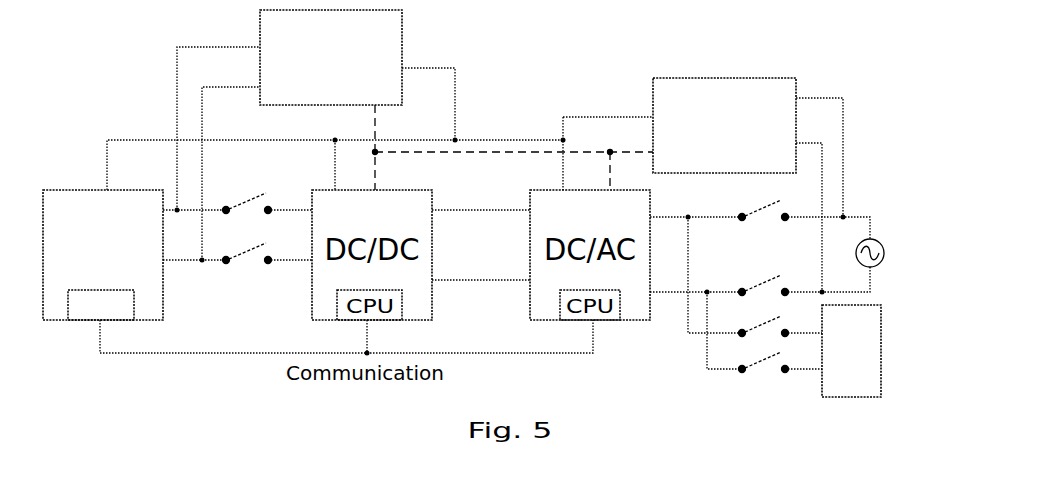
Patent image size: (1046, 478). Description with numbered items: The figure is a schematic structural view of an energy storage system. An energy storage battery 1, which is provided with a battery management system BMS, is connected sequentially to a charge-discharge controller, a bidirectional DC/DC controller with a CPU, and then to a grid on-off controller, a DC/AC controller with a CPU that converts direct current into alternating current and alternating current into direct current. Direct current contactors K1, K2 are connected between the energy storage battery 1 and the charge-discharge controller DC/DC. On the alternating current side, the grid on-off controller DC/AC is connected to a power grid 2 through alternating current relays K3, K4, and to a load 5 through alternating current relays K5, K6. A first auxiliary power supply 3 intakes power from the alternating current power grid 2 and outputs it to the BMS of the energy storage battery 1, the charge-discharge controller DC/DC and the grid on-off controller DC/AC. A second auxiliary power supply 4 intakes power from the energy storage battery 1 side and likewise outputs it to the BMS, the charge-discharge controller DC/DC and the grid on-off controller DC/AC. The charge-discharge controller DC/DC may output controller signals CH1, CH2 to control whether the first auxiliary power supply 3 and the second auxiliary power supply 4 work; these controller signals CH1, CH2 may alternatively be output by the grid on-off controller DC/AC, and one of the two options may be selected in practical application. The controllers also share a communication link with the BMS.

The energy storage battery 1 is at (78, 188).
The power grid 2 is at (880, 238).
The first auxiliary power supply 3 is at (716, 78).
The second auxiliary power supply 4 is at (402, 34).
The load 5 is at (881, 338).
The direct current contactor K1 is at (247, 192).
The direct current contactor K2 is at (247, 269).
The alternating current relay K3 is at (765, 200).
The alternating current relay K4 is at (764, 271).
The alternating current relay K5 is at (754, 319).
The alternating current relay K6 is at (754, 376).
The controller signal CH1 is at (612, 155).
The controller signal CH2 is at (513, 147).